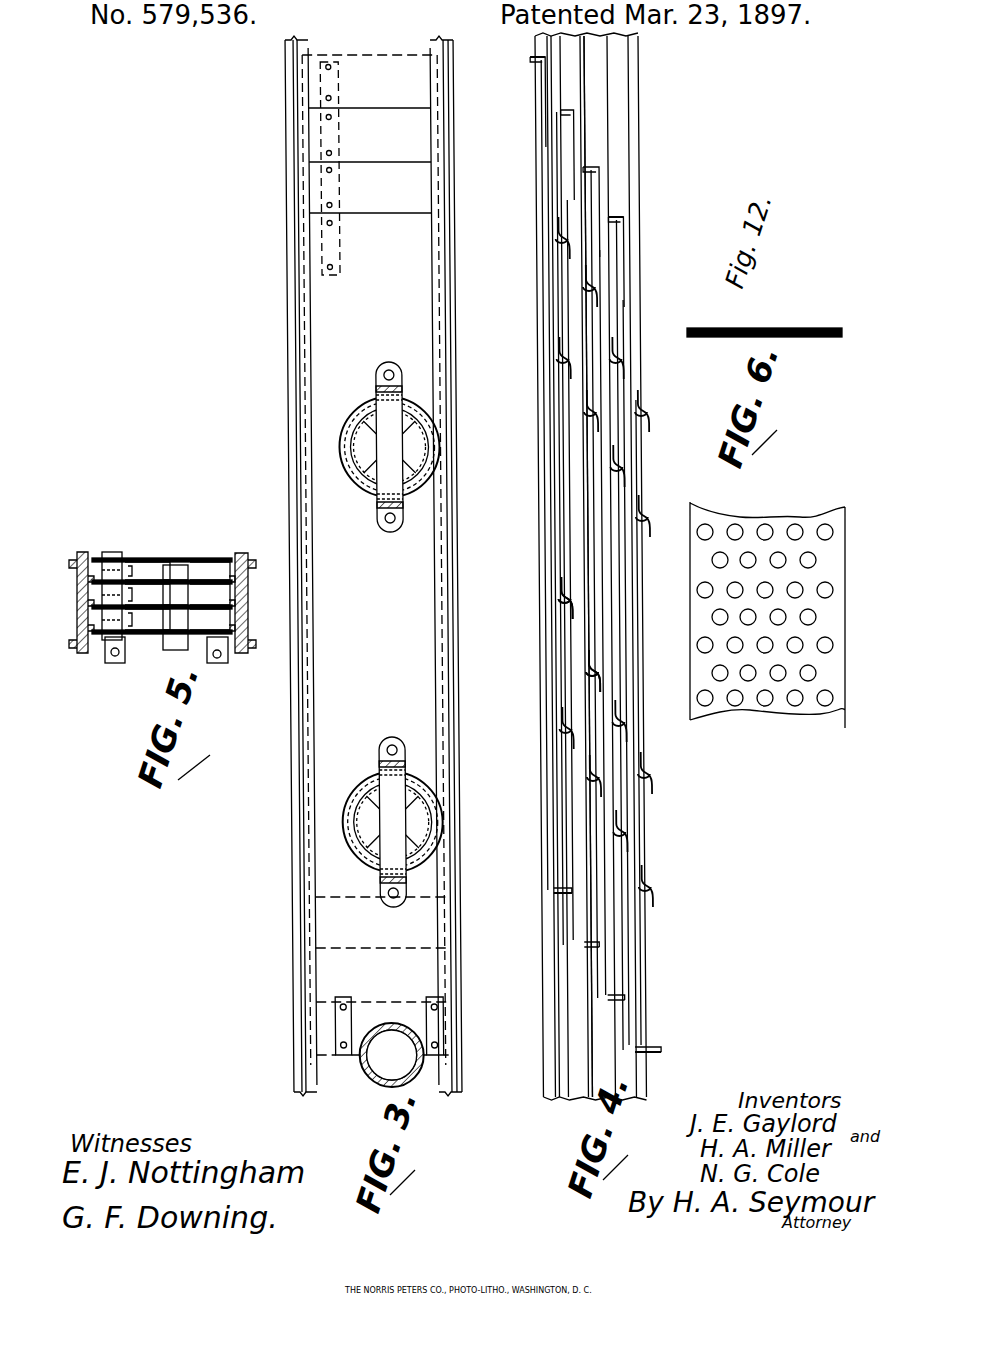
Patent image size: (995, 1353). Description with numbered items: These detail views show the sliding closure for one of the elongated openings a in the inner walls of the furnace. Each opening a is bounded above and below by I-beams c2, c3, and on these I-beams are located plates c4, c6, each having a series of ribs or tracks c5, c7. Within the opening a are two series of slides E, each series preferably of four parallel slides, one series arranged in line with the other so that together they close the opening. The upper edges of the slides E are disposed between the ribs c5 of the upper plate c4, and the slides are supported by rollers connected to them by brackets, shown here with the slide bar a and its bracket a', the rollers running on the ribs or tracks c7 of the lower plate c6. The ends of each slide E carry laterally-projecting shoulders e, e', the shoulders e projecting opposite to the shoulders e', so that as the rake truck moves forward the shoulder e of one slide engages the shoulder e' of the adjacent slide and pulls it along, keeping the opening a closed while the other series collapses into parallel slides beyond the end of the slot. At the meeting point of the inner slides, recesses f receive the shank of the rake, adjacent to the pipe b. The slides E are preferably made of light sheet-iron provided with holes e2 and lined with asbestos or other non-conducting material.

In FIG. 3, the elongated opening a is at (386, 626).
In FIG. 4, the elongated opening a is at (551, 656).
In FIG. 5, the elongated opening a is at (162, 600).
In FIG. 3, the bracket a' is at (384, 616).
In FIG. 4, the bracket a' is at (533, 589).
In FIG. 5, the bracket a' is at (166, 622).
In FIG. 3, the pipe b is at (358, 1075).
In FIG. 3, the recess f is at (383, 1023).
In FIG. 3, the slide E is at (387, 612).
In FIG. 4, the slide E is at (597, 517).
In FIG. 5, the slide E is at (140, 560).
In FIG. 12, the slide E is at (745, 328).
In FIG. 6, the slide E is at (767, 612).
In FIG. 4, the laterally-projecting shoulder e is at (590, 972).
In FIG. 4, the laterally-projecting shoulder e' is at (574, 126).
In FIG. 12, the hole e2 is at (700, 328).
In FIG. 6, the hole e2 is at (700, 532).
In FIG. 5, the I-beam c2 is at (70, 582).
In FIG. 5, the I-beam c3 is at (250, 598).
In FIG. 5, the upper plate c4 is at (80, 556).
In FIG. 5, the rib or track c5 is at (95, 555).
In FIG. 5, the lower plate c6 is at (240, 553).
In FIG. 5, the rib or track c7 is at (228, 560).